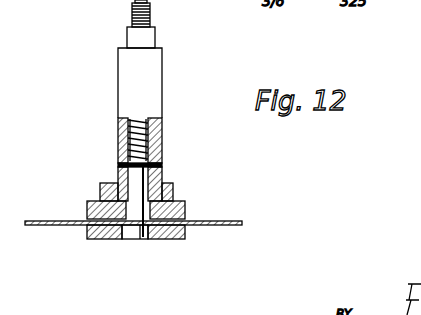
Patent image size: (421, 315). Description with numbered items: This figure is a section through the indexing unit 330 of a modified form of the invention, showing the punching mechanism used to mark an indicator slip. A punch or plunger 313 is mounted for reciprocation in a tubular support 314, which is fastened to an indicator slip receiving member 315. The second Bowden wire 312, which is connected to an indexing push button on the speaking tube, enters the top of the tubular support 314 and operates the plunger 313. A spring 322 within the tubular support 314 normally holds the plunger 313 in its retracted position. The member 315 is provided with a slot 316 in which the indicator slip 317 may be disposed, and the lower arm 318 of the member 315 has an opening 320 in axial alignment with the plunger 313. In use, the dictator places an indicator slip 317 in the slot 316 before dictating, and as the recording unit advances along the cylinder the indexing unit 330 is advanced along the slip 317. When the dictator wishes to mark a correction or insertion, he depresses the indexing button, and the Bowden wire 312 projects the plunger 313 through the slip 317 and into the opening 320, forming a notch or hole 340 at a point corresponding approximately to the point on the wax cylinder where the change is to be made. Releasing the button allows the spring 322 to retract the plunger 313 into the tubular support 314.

The second Bowden wire 312 is at (151, 13).
The indexing unit 330 is at (116, 67).
The spring 322 is at (118, 137).
The tubular support 314 is at (160, 138).
The notch or hole 340 is at (142, 238).
The plunger 313 is at (160, 190).
The indicator slip receiving member 315 is at (186, 201).
The slot 316 is at (88, 216).
The indicator slip 317 is at (35, 227).
The lower arm 318 is at (164, 240).
The opening 320 is at (131, 240).